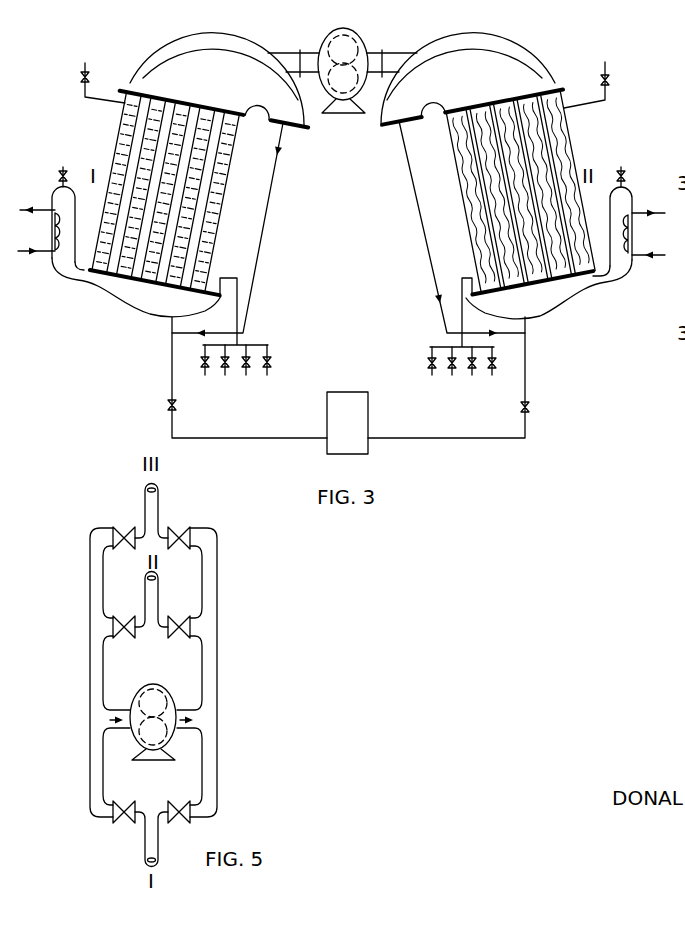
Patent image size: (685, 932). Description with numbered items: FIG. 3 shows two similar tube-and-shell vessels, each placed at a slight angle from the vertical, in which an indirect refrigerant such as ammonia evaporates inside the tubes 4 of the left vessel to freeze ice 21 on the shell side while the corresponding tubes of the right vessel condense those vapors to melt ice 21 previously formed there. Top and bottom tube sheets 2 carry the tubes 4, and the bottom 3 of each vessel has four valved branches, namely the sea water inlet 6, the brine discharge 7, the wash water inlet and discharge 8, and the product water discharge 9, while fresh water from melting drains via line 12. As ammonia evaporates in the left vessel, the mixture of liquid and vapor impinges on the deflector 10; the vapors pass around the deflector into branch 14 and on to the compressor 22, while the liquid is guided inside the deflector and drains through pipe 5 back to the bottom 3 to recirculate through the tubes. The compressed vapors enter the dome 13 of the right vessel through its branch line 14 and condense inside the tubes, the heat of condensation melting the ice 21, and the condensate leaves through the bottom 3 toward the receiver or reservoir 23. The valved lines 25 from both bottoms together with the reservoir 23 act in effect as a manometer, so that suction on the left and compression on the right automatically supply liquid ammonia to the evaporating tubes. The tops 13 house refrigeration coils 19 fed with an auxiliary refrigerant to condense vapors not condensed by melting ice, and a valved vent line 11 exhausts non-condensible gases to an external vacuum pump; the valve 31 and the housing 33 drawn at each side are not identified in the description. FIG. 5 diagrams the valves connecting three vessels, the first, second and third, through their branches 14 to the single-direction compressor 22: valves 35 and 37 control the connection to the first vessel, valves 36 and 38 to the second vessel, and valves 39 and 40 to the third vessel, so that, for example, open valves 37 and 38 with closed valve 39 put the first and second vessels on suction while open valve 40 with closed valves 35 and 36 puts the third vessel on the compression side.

In FIG. 3, the tube sheets 2 is at (124, 91).
In FIG. 3, the bottom of vessel 3 is at (132, 312).
In FIG. 3, the tubes 4 is at (357, 192).
In FIG. 3, the pipe 5 is at (259, 265).
In FIG. 3, the sea water inlet 6 is at (319, 375).
In FIG. 3, the brine discharge 7 is at (339, 375).
In FIG. 3, the wash water inlet and discharge 8 is at (359, 375).
In FIG. 3, the product water discharge 9 is at (380, 375).
In FIG. 3, the deflector 10 is at (230, 63).
In FIG. 3, the valved vent line 11 is at (60, 165).
In FIG. 3, the line 12 is at (222, 282).
In FIG. 3, the top of vessel (dome) 13 is at (342, 66).
In FIG. 3, the branch line 14 is at (342, 52).
In FIG. 5, the branch line 14 is at (155, 675).
In FIG. 3, the refrigeration coils 19 is at (342, 230).
In FIG. 3, the ice 21 is at (553, 133).
In FIG. 3, the compressor 22 is at (343, 83).
In FIG. 5, the compressor 22 is at (153, 708).
In FIG. 3, the receiver (reservoir) 23 is at (347, 406).
In FIG. 3, the valved lines 25 is at (351, 377).
In FIG. 3, the valve 31 is at (348, 67).
In FIG. 3, the heat exchanger 33 is at (77, 233).
In FIG. 5, the valve 35 is at (179, 800).
In FIG. 5, the valve 36 is at (180, 615).
In FIG. 5, the valve 37 is at (124, 800).
In FIG. 5, the valve 38 is at (125, 615).
In FIG. 5, the valve 39 is at (113, 524).
In FIG. 5, the valve 40 is at (193, 525).